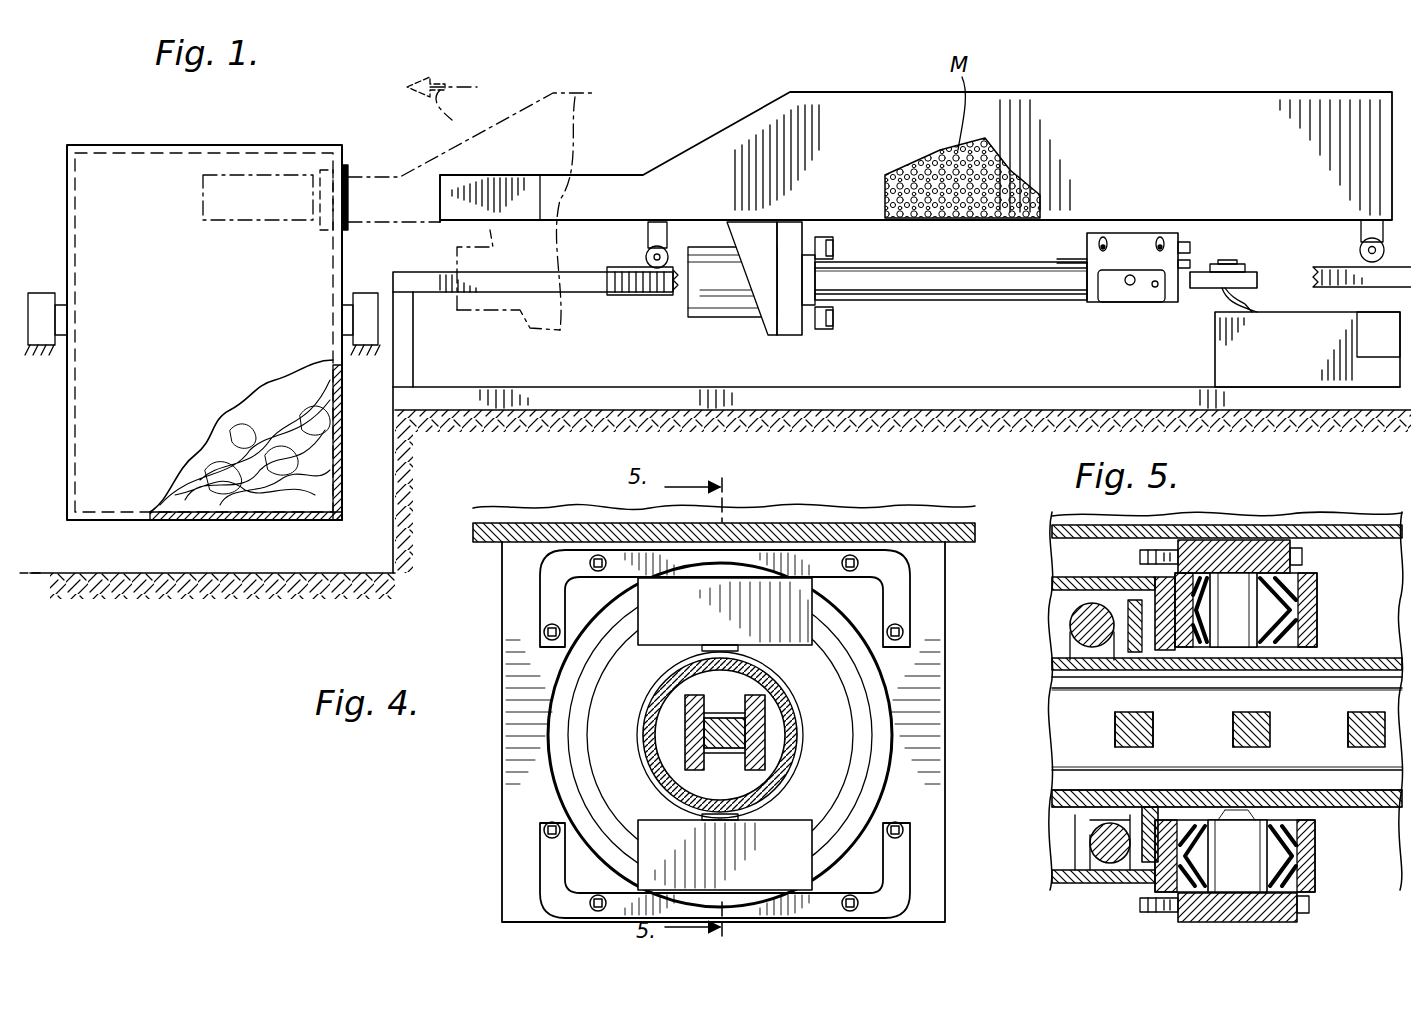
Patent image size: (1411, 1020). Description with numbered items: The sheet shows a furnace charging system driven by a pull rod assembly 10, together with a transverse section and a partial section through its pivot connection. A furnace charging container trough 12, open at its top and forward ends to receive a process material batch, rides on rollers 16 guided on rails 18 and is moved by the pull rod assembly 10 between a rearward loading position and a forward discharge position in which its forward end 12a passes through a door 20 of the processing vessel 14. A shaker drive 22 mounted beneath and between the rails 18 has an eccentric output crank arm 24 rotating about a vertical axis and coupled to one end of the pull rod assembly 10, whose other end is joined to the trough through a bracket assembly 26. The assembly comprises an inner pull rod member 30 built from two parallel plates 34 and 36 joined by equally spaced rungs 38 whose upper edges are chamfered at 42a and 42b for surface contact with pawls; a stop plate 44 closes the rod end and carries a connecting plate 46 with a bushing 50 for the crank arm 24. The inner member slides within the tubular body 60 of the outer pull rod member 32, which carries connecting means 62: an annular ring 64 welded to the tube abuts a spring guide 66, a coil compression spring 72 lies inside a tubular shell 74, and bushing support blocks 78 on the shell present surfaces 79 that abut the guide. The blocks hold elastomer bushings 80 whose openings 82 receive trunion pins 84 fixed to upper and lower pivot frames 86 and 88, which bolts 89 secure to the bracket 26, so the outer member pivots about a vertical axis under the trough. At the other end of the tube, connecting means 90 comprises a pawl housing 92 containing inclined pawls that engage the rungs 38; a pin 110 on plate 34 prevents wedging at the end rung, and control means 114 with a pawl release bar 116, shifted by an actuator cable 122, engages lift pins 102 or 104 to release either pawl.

In FIG. 1, the pull rod assembly 10 is at (952, 308).
In FIG. 1, the furnace charging container trough 12 is at (580, 80).
In FIG. 4, the furnace charging container trough 12 is at (945, 512).
In FIG. 5, the furnace charging container trough 12 is at (1385, 470).
In FIG. 1, the forward end of the container trough 12a is at (487, 186).
In FIG. 1, the processing vessel 14 is at (250, 138).
In FIG. 1, the rollers 16 is at (646, 255).
In FIG. 1, the rails 18 is at (592, 280).
In FIG. 1, the door 20 is at (348, 168).
In FIG. 1, the shaker drive 22 is at (1210, 374).
In FIG. 1, the output crank arm 24 is at (1240, 313).
In FIG. 1, the bracket assembly 26 is at (792, 325).
In FIG. 4, the bracket assembly 26 is at (946, 630).
In FIG. 5, the bracket assembly 26 is at (1170, 912).
In FIG. 1, the inner pull rod member 30 is at (1260, 280).
In FIG. 4, the inner pull rod member 30 is at (775, 748).
In FIG. 5, the inner pull rod member 30 is at (1080, 735).
In FIG. 1, the outer pull rod member 32 is at (955, 238).
In FIG. 4, the outer pull rod member 32 is at (640, 718).
In FIG. 5, the outer pull rod member 32 is at (1365, 665).
In FIG. 4, the elongated rectangular plate 34 is at (684, 748).
In FIG. 4, the elongated rectangular plate 36 is at (785, 710).
In FIG. 5, the elongated rectangular plate 36 is at (1082, 740).
In FIG. 1, the rungs 38 is at (1128, 284).
In FIG. 4, the rungs 38 is at (728, 718).
In FIG. 5, the rungs 38 is at (1155, 738).
In FIG. 5, the chamfered edge surface 42a is at (1152, 718).
In FIG. 5, the chamfered edge surface 42b is at (1116, 718).
In FIG. 1, the stop plate 44 is at (1188, 302).
In FIG. 1, the connecting plate 46 is at (1257, 292).
In FIG. 1, the annular bearing or bushing 50 is at (1236, 270).
In FIG. 1, the cylindrical tubular body 60 is at (1022, 282).
In FIG. 4, the cylindrical tubular body 60 is at (668, 700).
In FIG. 5, the cylindrical tubular body 60 is at (1360, 800).
In FIG. 1, the connecting means 62 is at (730, 320).
In FIG. 5, the connecting means 62 is at (1044, 600).
In FIG. 5, the annular ring 64 is at (1230, 805).
In FIG. 5, the annular spring guide 66 is at (1100, 612).
In FIG. 5, the coil compression spring 72 is at (1090, 855).
In FIG. 5, the tubular shell 74 is at (1100, 880).
In FIG. 4, the bushing support blocks 78 is at (636, 628).
In FIG. 5, the bushing support blocks 78 is at (1160, 605).
In FIG. 5, the abutment surface 79 is at (1148, 865).
In FIG. 5, the annular elastomer bushings 80 is at (1300, 600).
In FIG. 5, the openings 82 is at (1290, 618).
In FIG. 4, the trunion pins 84 is at (740, 648).
In FIG. 5, the trunion pins 84 is at (1258, 605).
In FIG. 1, the upper pivot frame 86 is at (835, 246).
In FIG. 4, the upper pivot frame 86 is at (548, 598).
In FIG. 5, the upper pivot frame 86 is at (1235, 542).
In FIG. 1, the lower pivot frame 88 is at (815, 320).
In FIG. 4, the lower pivot frame 88 is at (548, 845).
In FIG. 5, the lower pivot frame 88 is at (1308, 910).
In FIG. 4, the bolts 89 is at (590, 563).
In FIG. 5, the bolts 89 is at (1297, 550).
In FIG. 1, the connecting means 90 is at (1082, 245).
In FIG. 1, the pawl housing 92 is at (1100, 275).
In FIG. 1, the pawl lift pin 102 is at (1160, 237).
In FIG. 1, the pawl lift pin 104 is at (1103, 237).
In FIG. 1, the outwardly projecting pin 110 is at (1155, 288).
In FIG. 1, the control means 114 is at (1197, 262).
In FIG. 1, the pawl release bar 116 is at (1057, 261).
In FIG. 1, the actuator bar or control cable 122 is at (1195, 270).